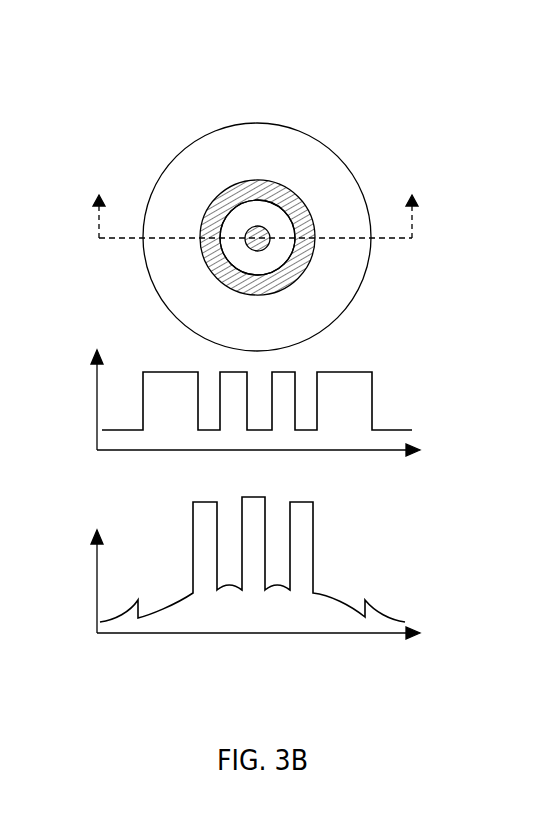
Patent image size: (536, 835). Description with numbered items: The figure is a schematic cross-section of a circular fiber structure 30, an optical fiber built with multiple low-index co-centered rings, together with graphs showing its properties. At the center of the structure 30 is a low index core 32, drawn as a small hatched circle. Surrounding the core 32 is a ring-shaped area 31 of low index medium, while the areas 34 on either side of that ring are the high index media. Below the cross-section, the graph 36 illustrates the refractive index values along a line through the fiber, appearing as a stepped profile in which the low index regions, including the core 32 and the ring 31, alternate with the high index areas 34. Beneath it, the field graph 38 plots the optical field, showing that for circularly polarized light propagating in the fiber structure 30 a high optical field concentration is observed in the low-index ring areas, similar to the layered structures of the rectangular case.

The fiber structure 30 is at (66, 115).
The low index medium area 31 is at (219, 196).
The low index core 32 is at (273, 226).
The high index medium area 34 is at (275, 205).
The graph of index values 36 is at (449, 385).
The field profile 38 is at (434, 551).